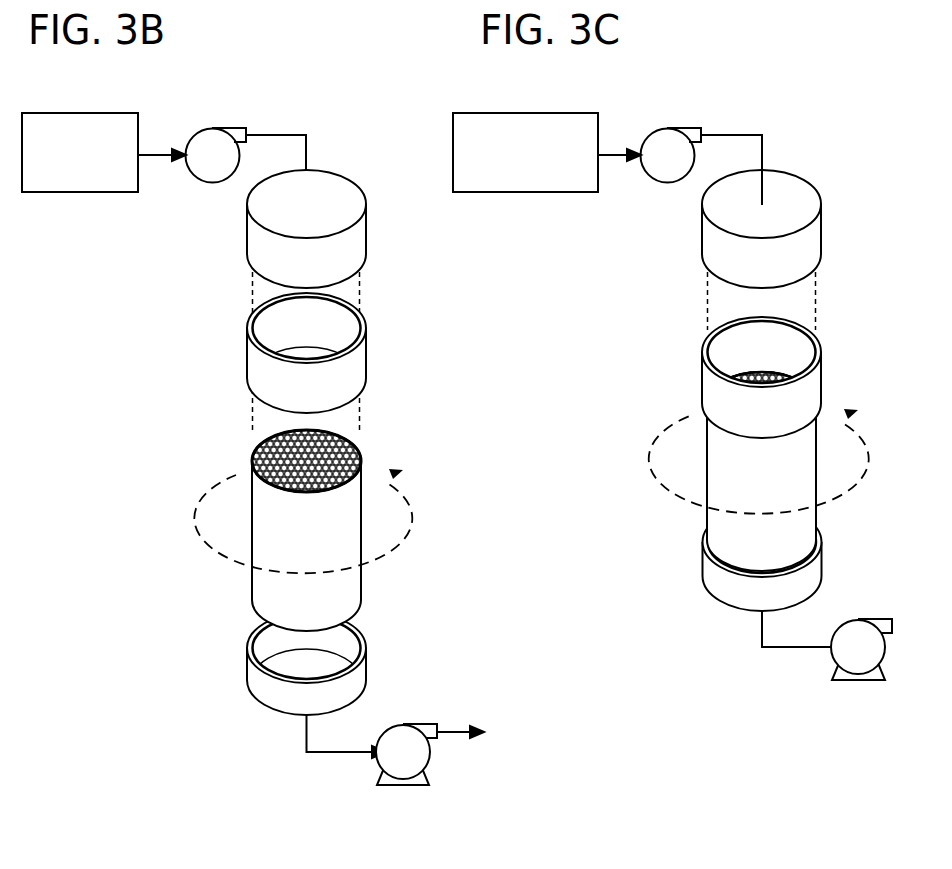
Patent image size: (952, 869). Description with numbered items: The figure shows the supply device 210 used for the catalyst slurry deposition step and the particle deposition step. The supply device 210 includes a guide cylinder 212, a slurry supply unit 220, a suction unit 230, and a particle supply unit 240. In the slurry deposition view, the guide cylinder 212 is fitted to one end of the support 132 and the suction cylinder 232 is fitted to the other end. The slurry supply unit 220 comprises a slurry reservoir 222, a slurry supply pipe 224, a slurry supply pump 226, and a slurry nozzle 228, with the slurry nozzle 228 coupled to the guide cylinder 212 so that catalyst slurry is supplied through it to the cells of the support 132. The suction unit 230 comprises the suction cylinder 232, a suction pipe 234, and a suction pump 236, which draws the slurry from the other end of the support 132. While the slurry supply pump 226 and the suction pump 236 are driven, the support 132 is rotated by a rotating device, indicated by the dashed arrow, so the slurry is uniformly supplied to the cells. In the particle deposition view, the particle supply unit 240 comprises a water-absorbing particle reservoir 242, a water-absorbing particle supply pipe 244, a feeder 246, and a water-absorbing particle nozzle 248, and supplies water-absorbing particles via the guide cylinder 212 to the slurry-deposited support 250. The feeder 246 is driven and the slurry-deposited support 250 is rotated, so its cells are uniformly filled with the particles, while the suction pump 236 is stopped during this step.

In FIG. 3B, the support 132 is at (284, 561).
In FIG. 3B, the supply device 210 is at (160, 722).
In FIG. 3C, the supply device 210 is at (626, 620).
In FIG. 3B, the guide cylinder 212 is at (247, 354).
In FIG. 3C, the guide cylinder 212 is at (702, 379).
In FIG. 3B, the slurry supply unit 220 is at (364, 155).
In FIG. 3B, the slurry reservoir 222 is at (119, 112).
In FIG. 3B, the slurry supply pipe 224 is at (161, 160).
In FIG. 3B, the slurry supply pump 226 is at (220, 126).
In FIG. 3B, the slurry nozzle 228 is at (247, 232).
In FIG. 3B, the suction unit 230 is at (453, 664).
In FIG. 3C, the suction unit 230 is at (907, 559).
In FIG. 3B, the suction cylinder 232 is at (247, 661).
In FIG. 3C, the suction cylinder 232 is at (702, 557).
In FIG. 3B, the suction pipe 234 is at (331, 756).
In FIG. 3C, the suction pipe 234 is at (786, 651).
In FIG. 3B, the suction pump 236 is at (406, 788).
In FIG. 3C, the suction pump 236 is at (861, 683).
In FIG. 3C, the particle supply unit 240 is at (822, 155).
In FIG. 3C, the water-absorbing particle reservoir 242 is at (574, 112).
In FIG. 3C, the water-absorbing particle supply pipe 244 is at (616, 160).
In FIG. 3C, the feeder 246 is at (675, 126).
In FIG. 3C, the water-absorbing particle nozzle 248 is at (702, 232).
In FIG. 3C, the slurry-deposited support 250 is at (741, 501).